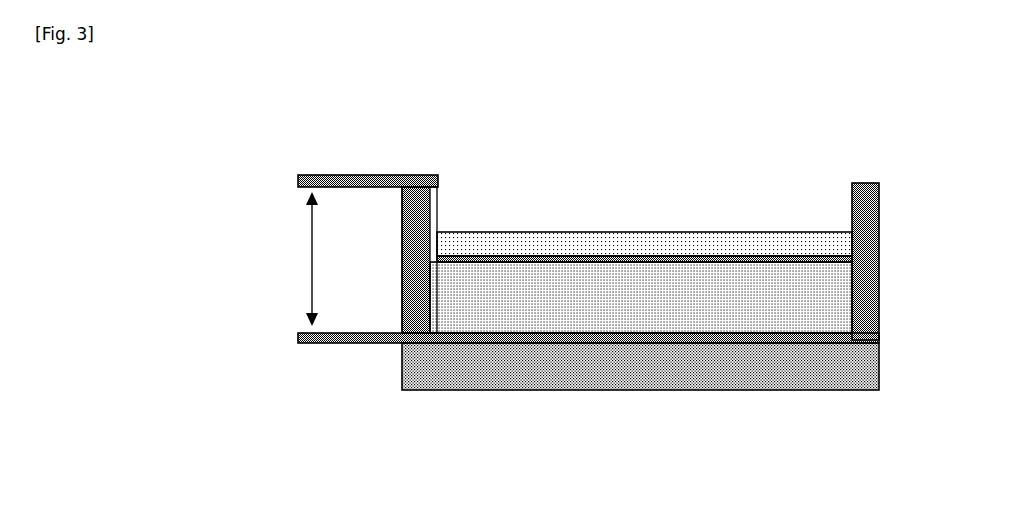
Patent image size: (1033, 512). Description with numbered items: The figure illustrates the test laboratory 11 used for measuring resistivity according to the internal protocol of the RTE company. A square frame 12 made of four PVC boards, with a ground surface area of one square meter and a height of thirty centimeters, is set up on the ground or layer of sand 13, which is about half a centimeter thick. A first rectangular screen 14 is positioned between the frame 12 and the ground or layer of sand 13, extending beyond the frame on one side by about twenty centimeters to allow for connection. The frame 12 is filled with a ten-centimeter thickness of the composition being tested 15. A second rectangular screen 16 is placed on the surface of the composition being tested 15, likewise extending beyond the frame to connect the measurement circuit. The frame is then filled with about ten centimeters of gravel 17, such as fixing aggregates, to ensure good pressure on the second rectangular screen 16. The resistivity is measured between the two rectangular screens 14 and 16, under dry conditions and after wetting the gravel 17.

The test laboratory 11 is at (191, 192).
The square frame 12 is at (882, 256).
The ground or layer of sand 13 is at (684, 372).
The first rectangular screen 14 is at (322, 346).
The composition being tested 15 is at (563, 302).
The second rectangular screen 16 is at (395, 174).
The gravel 17 is at (568, 231).